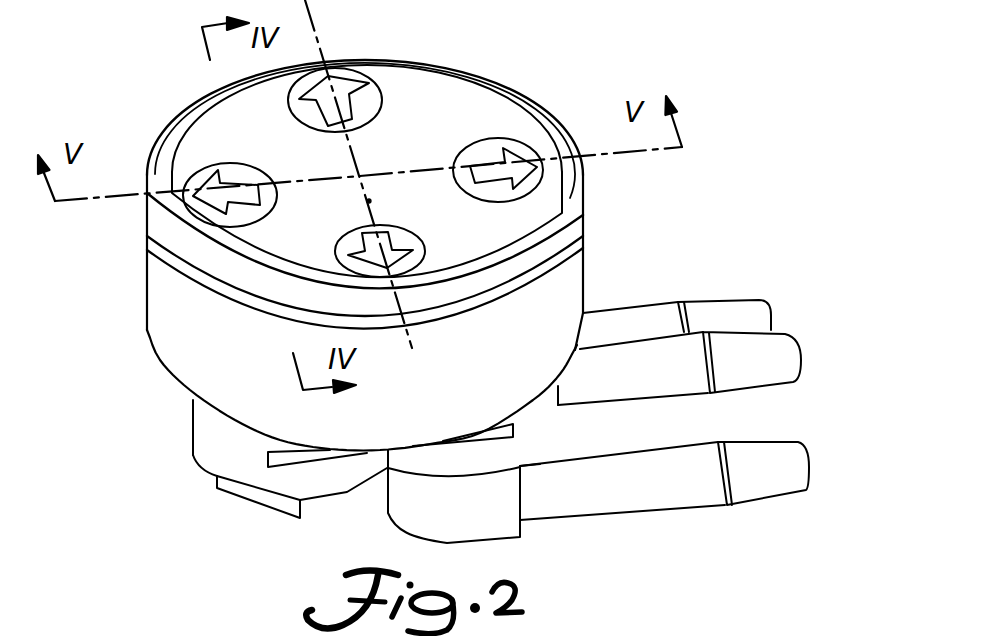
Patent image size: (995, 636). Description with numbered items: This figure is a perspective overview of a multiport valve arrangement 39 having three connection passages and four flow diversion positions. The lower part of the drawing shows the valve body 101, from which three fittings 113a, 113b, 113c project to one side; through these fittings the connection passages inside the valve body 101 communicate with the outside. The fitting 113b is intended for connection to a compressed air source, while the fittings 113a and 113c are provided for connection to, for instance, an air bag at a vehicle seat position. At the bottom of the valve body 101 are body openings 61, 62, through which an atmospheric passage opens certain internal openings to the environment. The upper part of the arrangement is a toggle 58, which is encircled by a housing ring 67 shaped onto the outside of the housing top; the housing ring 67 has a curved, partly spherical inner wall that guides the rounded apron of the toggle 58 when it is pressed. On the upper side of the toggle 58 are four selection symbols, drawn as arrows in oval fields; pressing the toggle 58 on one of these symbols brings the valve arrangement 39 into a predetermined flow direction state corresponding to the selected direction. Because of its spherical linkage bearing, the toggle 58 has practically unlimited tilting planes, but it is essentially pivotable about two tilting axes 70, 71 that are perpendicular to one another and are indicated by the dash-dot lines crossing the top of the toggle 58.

The valve arrangement 39 is at (640, 228).
The toggle 58 is at (246, 118).
The tilting axis 71 is at (133, 197).
The tilting axis 70 is at (368, 203).
The housing ring 67 is at (533, 365).
The valve body 101 is at (207, 447).
The body opening 61 is at (307, 460).
The body opening 62 is at (467, 443).
The fitting 113a is at (630, 327).
The fitting 113b is at (752, 373).
The fitting 113c is at (760, 475).